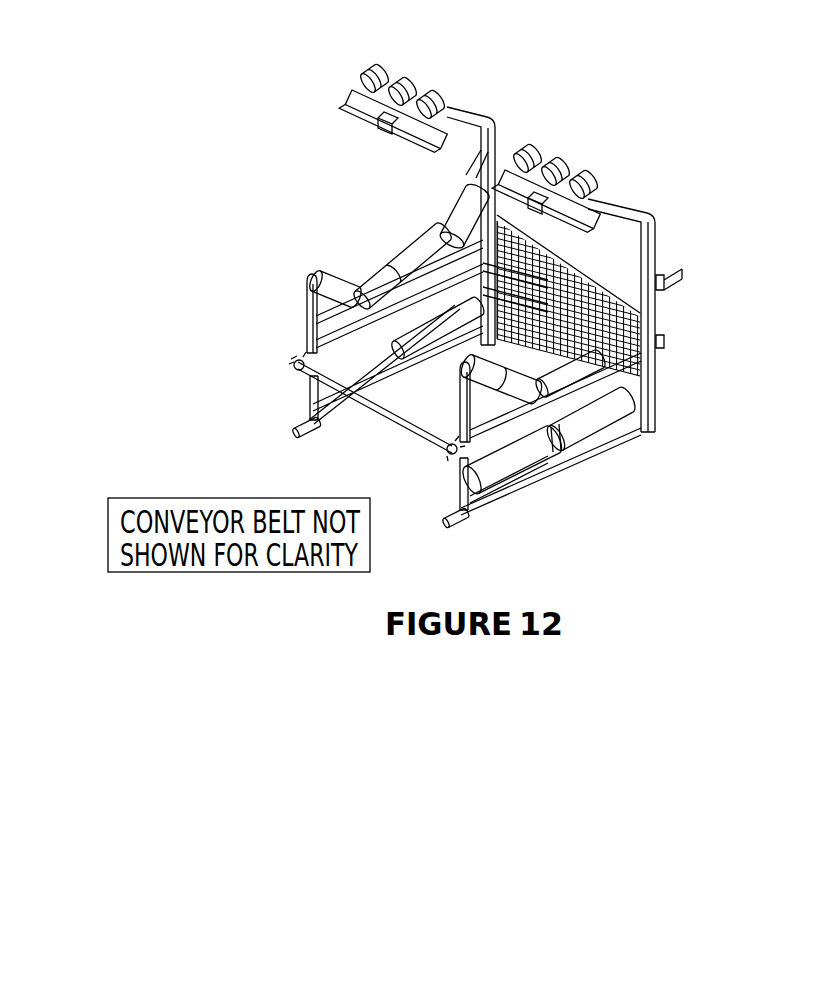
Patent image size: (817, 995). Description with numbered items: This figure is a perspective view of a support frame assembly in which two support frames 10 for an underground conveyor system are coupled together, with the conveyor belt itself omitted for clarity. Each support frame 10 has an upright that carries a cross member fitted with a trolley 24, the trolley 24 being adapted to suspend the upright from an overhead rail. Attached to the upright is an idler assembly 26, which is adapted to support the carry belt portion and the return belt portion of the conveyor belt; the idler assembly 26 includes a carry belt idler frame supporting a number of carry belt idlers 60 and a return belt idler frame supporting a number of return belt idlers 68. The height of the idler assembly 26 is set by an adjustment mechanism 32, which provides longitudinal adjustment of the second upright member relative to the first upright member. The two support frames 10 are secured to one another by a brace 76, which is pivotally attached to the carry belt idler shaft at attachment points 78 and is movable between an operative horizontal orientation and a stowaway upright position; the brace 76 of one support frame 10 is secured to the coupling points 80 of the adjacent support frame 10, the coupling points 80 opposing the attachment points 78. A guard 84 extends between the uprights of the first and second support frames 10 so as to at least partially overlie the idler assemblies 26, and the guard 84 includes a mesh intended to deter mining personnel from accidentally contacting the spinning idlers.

The support frame 10 is at (665, 225).
The trolley 24 is at (553, 168).
The idler assembly 26 is at (284, 296).
The adjustment mechanism 32 is at (672, 282).
The carry belt idlers 60 is at (500, 110).
The return belt idlers 68 is at (600, 417).
The brace 76 is at (385, 415).
The attachment points 78 is at (300, 364).
The coupling points 80 is at (446, 456).
The guard 84 is at (585, 250).